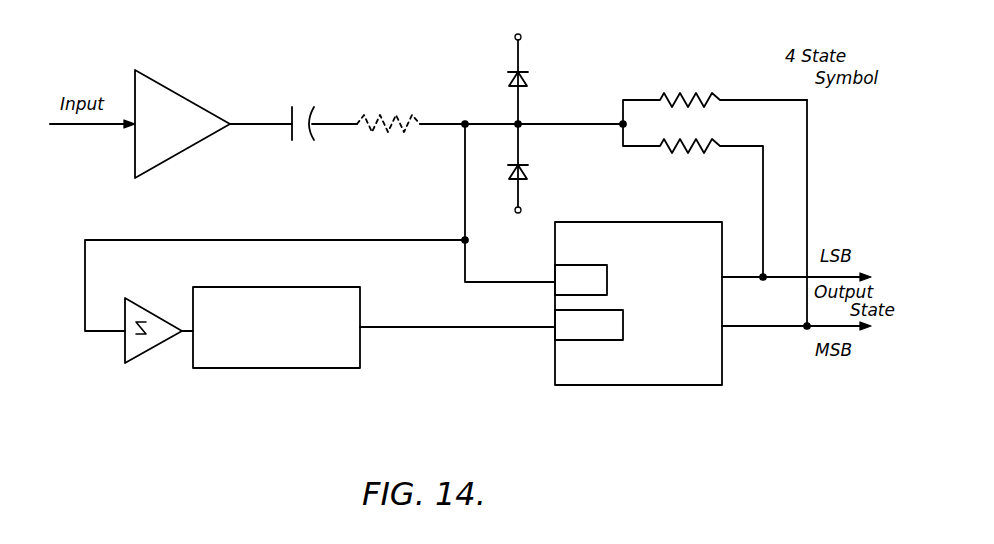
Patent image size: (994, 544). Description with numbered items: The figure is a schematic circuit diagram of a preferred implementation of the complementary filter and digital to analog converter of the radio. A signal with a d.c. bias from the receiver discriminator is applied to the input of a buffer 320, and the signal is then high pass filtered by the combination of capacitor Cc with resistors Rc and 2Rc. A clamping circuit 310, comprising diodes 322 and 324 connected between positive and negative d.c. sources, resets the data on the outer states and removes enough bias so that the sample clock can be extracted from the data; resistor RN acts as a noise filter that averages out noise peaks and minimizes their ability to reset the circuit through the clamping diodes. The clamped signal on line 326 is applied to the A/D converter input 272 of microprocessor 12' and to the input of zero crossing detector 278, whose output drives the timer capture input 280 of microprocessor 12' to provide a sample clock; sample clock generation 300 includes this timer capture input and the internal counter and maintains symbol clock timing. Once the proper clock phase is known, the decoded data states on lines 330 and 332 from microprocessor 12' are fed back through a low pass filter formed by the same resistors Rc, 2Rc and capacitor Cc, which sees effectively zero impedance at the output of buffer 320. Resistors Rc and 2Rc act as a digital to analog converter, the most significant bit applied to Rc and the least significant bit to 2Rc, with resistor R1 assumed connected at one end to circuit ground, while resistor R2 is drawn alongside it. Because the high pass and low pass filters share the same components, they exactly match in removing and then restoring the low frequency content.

The buffer 320 is at (170, 90).
The capacitor Cc is at (302, 108).
The resistor RN is at (386, 122).
The line 326 is at (465, 184).
The clamping circuit 310 is at (531, 119).
The diode 322 is at (524, 82).
The diode 324 is at (526, 172).
The resistor Rc is at (680, 97).
The resistor R1 is at (712, 93).
The resistor 2Rc is at (697, 150).
The resistor R2 is at (710, 154).
The microprocessor 12' is at (616, 324).
The A/D converter input 272 is at (555, 274).
The timer capture input 280 is at (555, 333).
The line 330 is at (780, 276).
The line 332 is at (770, 328).
The zero crossing detector 278 is at (143, 354).
The sample clock generation 300 is at (312, 368).